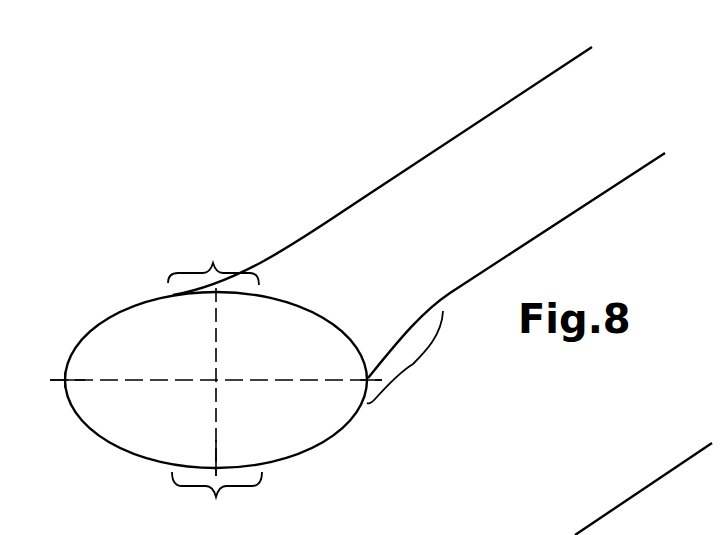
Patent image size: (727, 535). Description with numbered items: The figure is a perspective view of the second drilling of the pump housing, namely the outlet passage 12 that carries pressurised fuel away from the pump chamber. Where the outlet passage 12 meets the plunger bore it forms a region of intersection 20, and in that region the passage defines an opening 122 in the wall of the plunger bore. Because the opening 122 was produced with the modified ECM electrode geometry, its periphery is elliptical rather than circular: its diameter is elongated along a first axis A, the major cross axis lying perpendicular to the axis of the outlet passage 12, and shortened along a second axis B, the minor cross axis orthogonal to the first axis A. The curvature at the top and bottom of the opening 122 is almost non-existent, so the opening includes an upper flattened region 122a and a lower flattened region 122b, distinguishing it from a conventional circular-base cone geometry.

The outlet passage 12 is at (480, 167).
The opening 122 is at (88, 337).
The upper flattened region 122a is at (213, 257).
The lower flattened region 122b is at (217, 502).
The region of intersection 20 is at (410, 357).
The first axis A is at (65, 383).
The second axis B is at (213, 445).